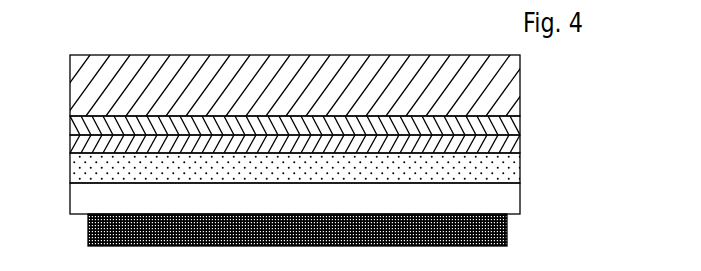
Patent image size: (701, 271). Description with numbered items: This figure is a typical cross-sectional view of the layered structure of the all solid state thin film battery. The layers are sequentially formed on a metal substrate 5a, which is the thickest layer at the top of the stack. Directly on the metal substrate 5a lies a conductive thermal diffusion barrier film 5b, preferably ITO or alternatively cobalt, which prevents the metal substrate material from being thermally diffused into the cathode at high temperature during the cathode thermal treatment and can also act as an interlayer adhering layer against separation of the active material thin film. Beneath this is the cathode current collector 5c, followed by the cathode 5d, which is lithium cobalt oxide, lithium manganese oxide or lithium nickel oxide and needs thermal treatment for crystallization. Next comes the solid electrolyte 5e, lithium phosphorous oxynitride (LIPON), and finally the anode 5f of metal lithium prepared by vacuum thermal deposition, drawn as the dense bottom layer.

The metal substrate 5a is at (507, 91).
The conductive thermal diffusion barrier film 5b is at (508, 130).
The cathode current collector 5c is at (508, 152).
The cathode 5d is at (508, 178).
The solid electrolyte 5e is at (508, 209).
The anode 5f is at (500, 234).